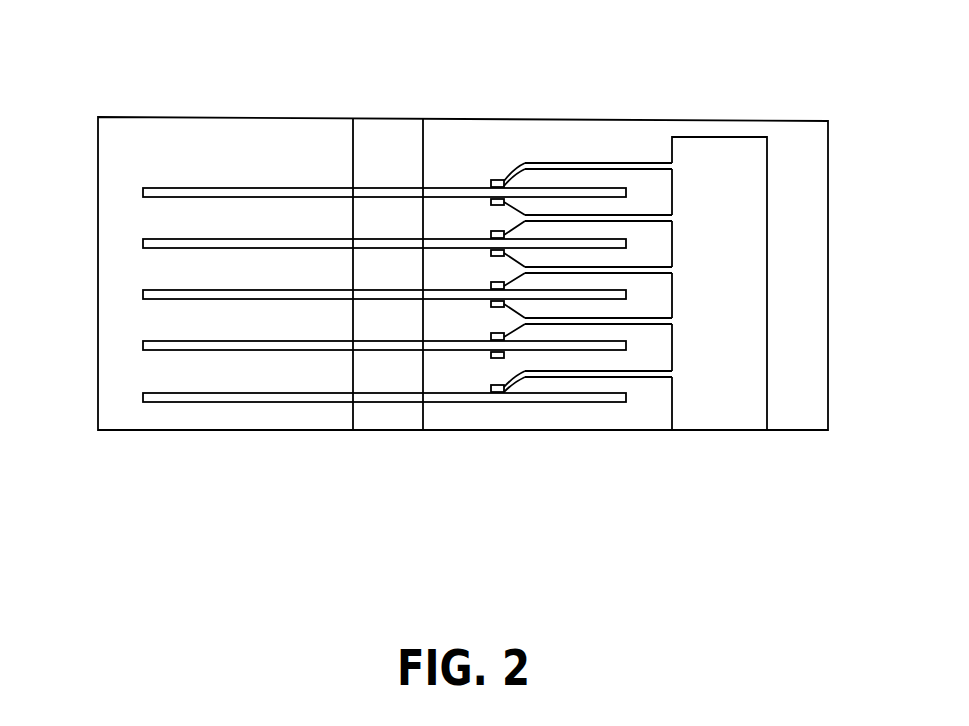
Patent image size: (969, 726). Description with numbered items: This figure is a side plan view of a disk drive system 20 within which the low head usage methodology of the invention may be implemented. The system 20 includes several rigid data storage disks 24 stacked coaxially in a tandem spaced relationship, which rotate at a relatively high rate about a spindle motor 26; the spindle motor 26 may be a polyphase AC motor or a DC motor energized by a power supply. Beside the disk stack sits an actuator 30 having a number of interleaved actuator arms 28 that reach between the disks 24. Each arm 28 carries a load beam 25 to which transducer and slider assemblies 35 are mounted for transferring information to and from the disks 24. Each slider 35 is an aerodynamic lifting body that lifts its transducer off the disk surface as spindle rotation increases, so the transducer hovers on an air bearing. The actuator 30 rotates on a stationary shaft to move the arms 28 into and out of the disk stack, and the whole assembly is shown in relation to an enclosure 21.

The disk drive system 20 is at (725, 95).
The substrate 21 is at (828, 314).
The data storage disks 24 is at (143, 192).
The load beam 25 is at (523, 173).
The spindle motor 26 is at (380, 421).
The actuator arms 28 is at (580, 163).
The actuator 30 is at (717, 404).
The slider assemblies 35 is at (497, 179).